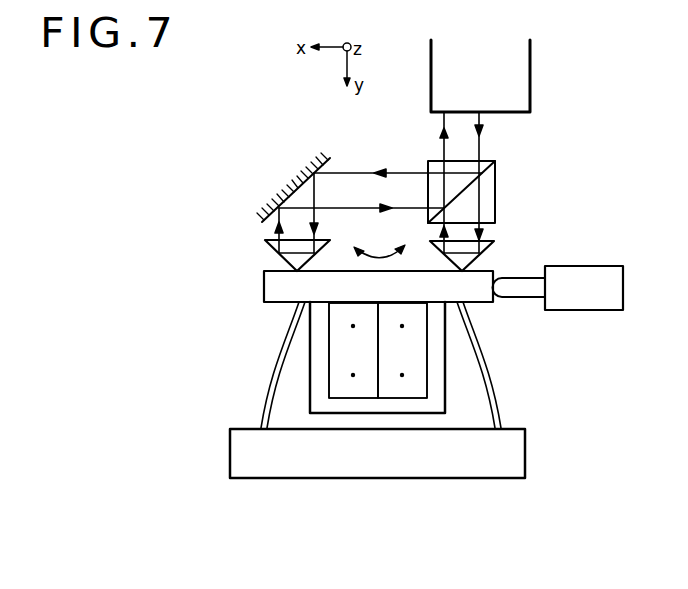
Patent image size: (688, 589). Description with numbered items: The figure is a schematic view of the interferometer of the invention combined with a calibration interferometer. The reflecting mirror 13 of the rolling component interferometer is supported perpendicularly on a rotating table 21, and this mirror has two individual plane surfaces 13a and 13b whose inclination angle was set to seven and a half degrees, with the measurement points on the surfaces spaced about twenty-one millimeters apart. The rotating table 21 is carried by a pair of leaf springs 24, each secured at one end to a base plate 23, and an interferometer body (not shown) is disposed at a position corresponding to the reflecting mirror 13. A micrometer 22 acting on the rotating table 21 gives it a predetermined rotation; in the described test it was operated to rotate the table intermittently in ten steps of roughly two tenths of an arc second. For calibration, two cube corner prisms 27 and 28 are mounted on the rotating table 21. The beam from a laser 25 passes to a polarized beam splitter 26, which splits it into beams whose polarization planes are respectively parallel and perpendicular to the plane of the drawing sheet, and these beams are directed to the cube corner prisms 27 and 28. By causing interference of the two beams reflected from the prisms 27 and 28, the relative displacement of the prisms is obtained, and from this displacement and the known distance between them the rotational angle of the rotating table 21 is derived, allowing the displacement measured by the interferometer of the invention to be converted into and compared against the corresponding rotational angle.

The reflecting mirror 13 is at (371, 425).
The plane surface 13a is at (333, 397).
The plane surface 13b is at (416, 397).
The rotating table 21 is at (268, 290).
The micrometer 22 is at (612, 300).
The base plate 23 is at (236, 454).
The leaf springs 24 is at (273, 370).
The laser 25 is at (530, 93).
The polarized beam splitter 26 is at (437, 165).
The cube corner prism 27 is at (436, 245).
The cube corner prism 28 is at (268, 240).